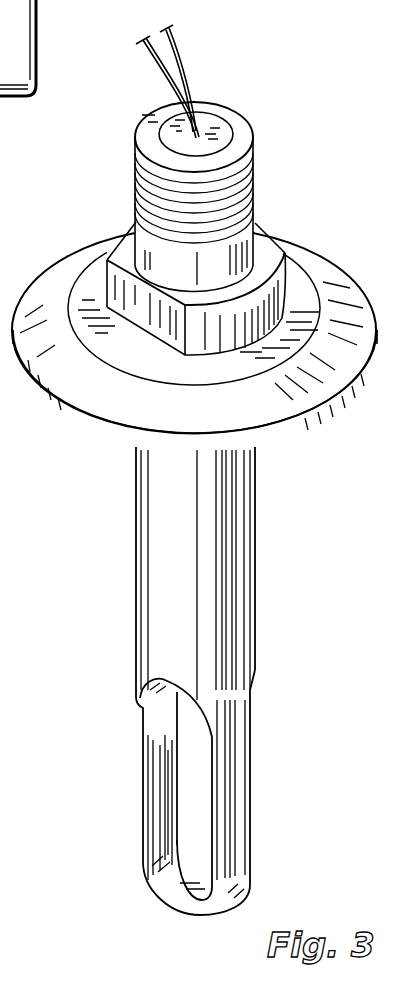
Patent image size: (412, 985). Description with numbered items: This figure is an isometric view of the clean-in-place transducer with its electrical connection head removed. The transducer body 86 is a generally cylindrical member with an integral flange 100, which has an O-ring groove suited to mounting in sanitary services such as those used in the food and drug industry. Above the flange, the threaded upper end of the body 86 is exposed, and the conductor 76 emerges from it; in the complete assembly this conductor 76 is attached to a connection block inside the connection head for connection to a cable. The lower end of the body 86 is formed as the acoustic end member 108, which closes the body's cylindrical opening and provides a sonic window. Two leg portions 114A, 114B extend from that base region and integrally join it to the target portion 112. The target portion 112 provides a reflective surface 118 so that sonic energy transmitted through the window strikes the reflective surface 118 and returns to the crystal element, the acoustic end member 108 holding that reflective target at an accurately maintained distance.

The conductor 76 is at (170, 50).
The integral flange 100 is at (125, 405).
The transducer body 86 is at (162, 543).
The acoustic end member 108 is at (268, 792).
The leg portion 114A is at (158, 812).
The leg portion 114B is at (240, 833).
The reflective surface 118 is at (178, 877).
The target portion 112 is at (178, 898).